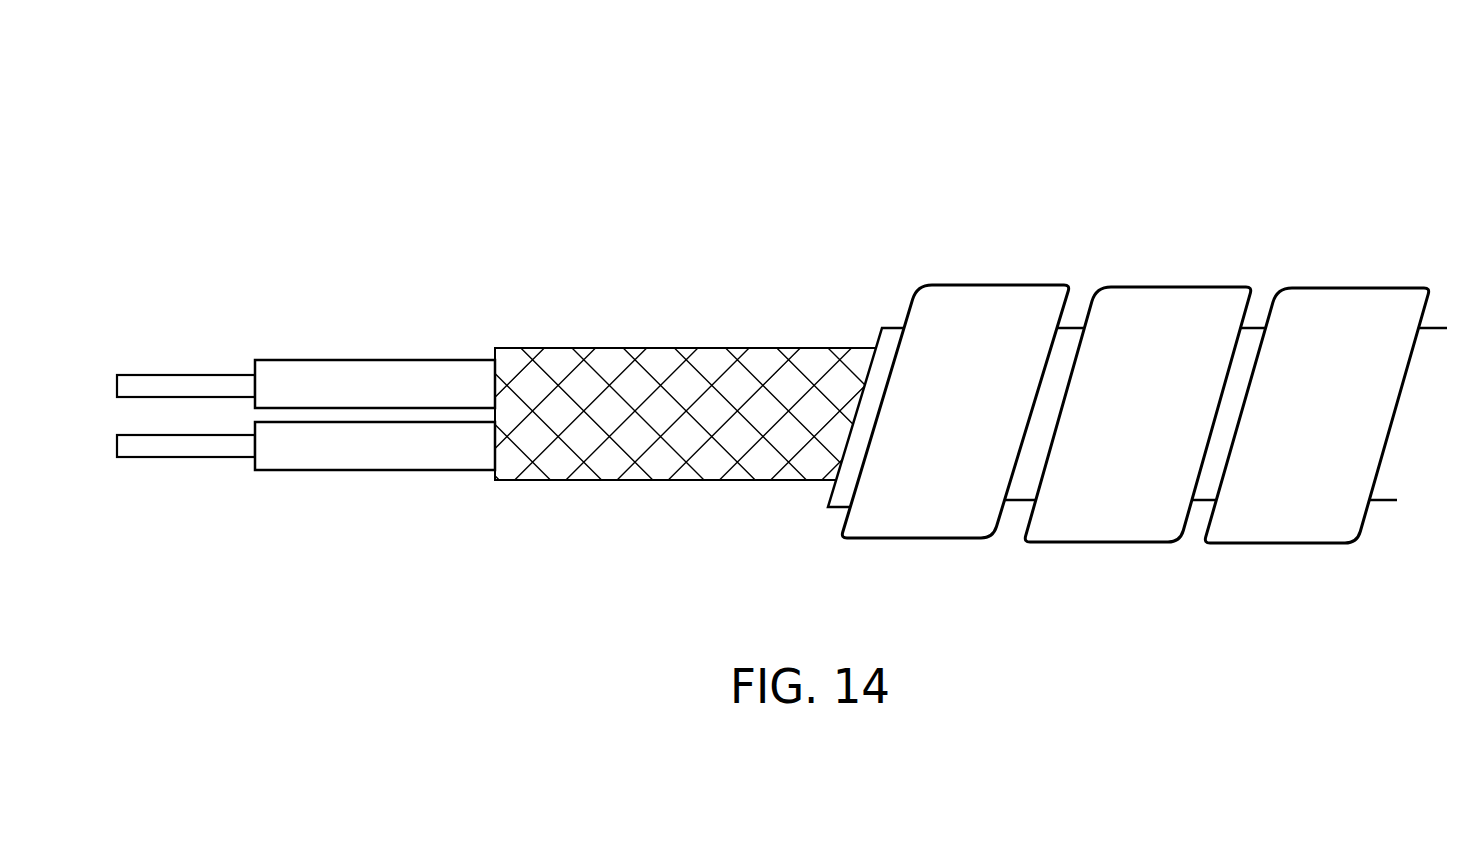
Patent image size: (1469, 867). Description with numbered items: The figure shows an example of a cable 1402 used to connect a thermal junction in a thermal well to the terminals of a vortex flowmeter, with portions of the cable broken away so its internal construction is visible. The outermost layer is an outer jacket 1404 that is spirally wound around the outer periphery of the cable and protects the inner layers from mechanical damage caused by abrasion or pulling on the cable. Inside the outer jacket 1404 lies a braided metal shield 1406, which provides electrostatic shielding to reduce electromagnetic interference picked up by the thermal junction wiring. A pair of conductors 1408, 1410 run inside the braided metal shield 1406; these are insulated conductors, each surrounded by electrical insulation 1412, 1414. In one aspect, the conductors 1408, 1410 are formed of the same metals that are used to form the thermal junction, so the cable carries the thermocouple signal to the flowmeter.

The cable 1402 is at (347, 148).
The outer jacket 1404 is at (956, 285).
The braided metal shield 1406 is at (598, 348).
The conductor 1408 is at (135, 458).
The conductor 1410 is at (131, 374).
The electrical insulation 1412 is at (335, 470).
The electrical insulation 1414 is at (307, 360).